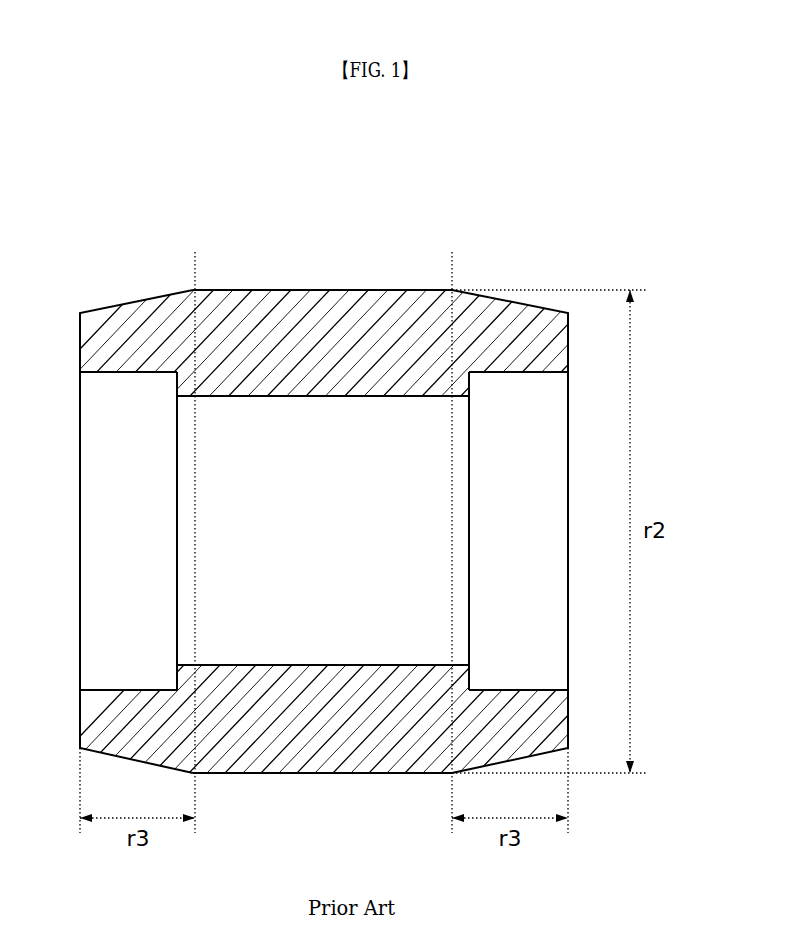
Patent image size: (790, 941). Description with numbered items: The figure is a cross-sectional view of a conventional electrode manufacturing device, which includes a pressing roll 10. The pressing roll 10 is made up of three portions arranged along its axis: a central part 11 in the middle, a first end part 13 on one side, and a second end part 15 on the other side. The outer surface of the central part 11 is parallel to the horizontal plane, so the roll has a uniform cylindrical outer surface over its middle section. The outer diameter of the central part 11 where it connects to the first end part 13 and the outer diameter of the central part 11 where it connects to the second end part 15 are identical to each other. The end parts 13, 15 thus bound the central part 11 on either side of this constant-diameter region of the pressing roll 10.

The pressing roll 10 is at (308, 183).
The central part 11 is at (320, 313).
The first end part 13 is at (135, 323).
The second end part 15 is at (507, 322).